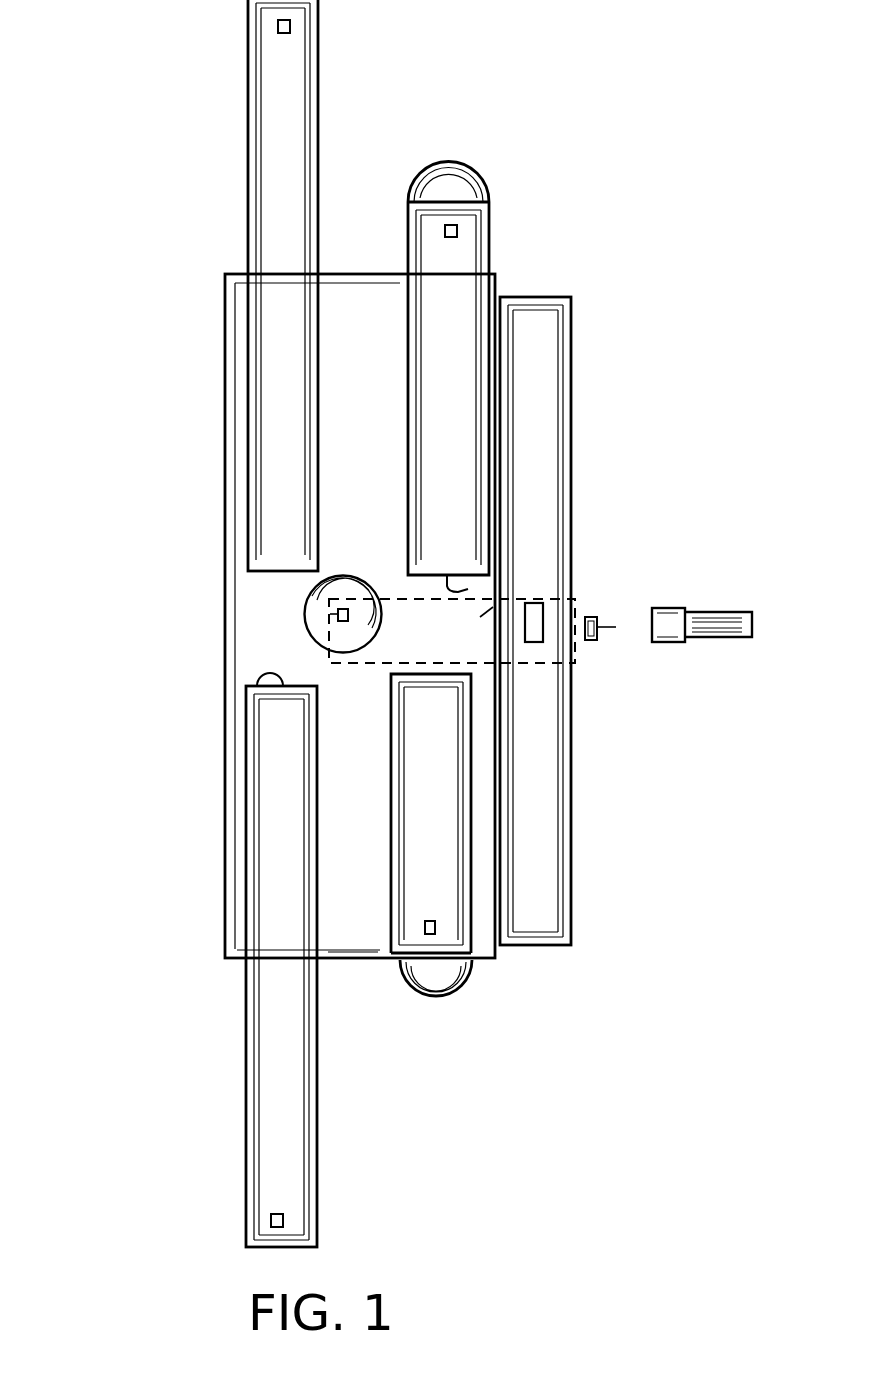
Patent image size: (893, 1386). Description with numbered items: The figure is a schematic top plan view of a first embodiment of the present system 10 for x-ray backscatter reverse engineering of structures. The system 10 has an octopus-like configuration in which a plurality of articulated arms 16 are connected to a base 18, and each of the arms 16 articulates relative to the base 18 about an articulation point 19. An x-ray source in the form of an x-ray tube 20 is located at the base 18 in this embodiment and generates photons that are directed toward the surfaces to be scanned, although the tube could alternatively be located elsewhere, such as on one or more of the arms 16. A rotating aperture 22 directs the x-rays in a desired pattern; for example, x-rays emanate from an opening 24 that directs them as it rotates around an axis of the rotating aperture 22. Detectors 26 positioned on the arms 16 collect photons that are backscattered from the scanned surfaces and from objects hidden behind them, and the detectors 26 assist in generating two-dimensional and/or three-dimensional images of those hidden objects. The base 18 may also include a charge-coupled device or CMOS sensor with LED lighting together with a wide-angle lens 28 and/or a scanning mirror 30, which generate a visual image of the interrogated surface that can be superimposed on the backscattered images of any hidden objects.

The system 10 is at (129, 465).
The articulated arm 16 is at (268, 75).
The base 18 is at (385, 389).
The articulation point 19 is at (275, 571).
The x-ray tube 20 is at (515, 593).
The rotating aperture 22 is at (557, 383).
The opening 24 is at (538, 636).
The detector 26 is at (290, 27).
The wide-angle lens 28 is at (752, 626).
The scanning mirror 30 is at (600, 610).